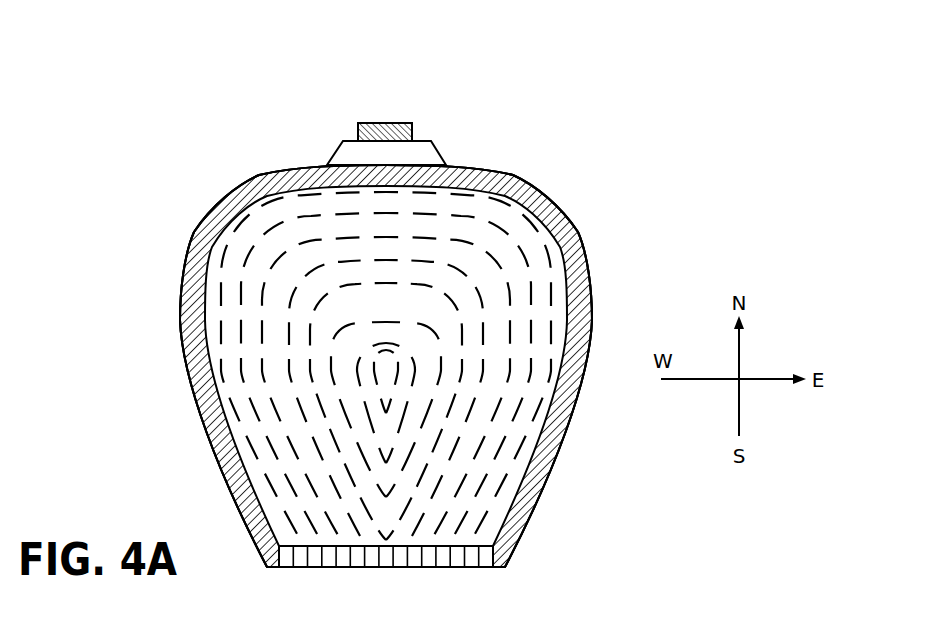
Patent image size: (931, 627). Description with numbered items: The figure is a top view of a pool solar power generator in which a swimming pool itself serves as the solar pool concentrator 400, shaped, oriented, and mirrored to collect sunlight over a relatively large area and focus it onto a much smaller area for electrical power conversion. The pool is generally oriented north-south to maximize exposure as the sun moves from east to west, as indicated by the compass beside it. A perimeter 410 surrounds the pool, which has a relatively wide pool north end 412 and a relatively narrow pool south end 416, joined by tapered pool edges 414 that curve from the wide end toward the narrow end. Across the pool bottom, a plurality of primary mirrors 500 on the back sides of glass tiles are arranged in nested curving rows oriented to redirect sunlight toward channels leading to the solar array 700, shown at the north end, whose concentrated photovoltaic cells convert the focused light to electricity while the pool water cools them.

The solar pool concentrator 400 is at (243, 115).
The perimeter 410 is at (553, 463).
The pool north end 412 is at (494, 169).
The tapered pool edges 414 is at (190, 328).
The pool south end 416 is at (385, 557).
The primary mirrors 500 is at (257, 218).
The solar array 700 is at (392, 122).